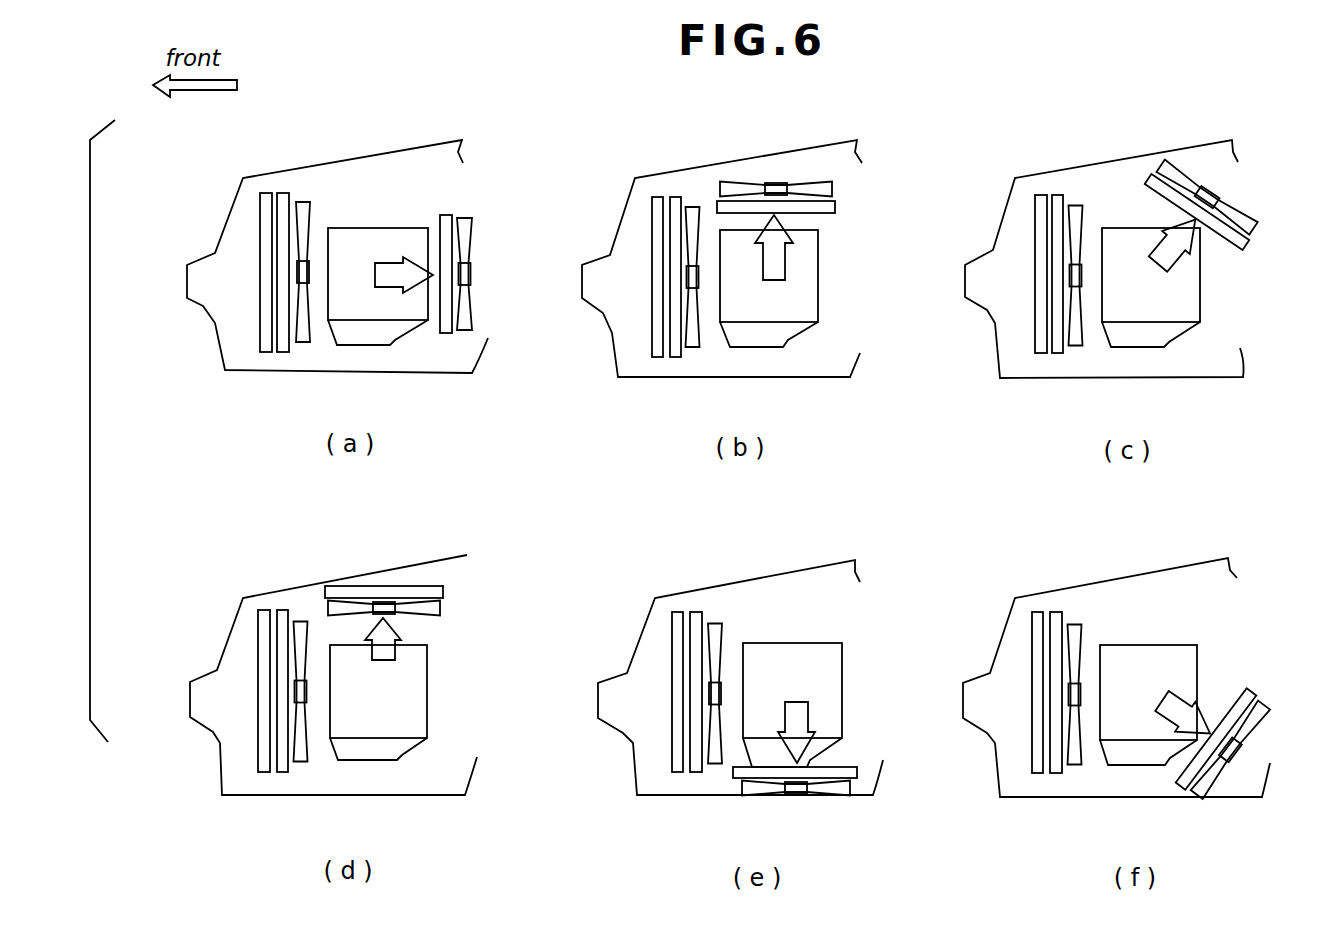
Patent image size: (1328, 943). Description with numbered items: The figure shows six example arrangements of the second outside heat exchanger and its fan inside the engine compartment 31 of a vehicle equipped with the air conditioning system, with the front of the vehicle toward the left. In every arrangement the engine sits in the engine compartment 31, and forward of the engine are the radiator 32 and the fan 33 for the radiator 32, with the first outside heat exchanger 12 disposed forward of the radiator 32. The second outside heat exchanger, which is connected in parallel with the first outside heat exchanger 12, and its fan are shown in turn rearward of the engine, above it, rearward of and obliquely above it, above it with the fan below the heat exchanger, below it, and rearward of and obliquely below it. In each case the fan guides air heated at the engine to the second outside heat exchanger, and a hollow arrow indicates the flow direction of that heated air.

The first outside heat exchanger 12 is at (263, 193).
The engine compartment 31 is at (225, 285).
The radiator 32 is at (283, 192).
The fan 33 is at (308, 200).